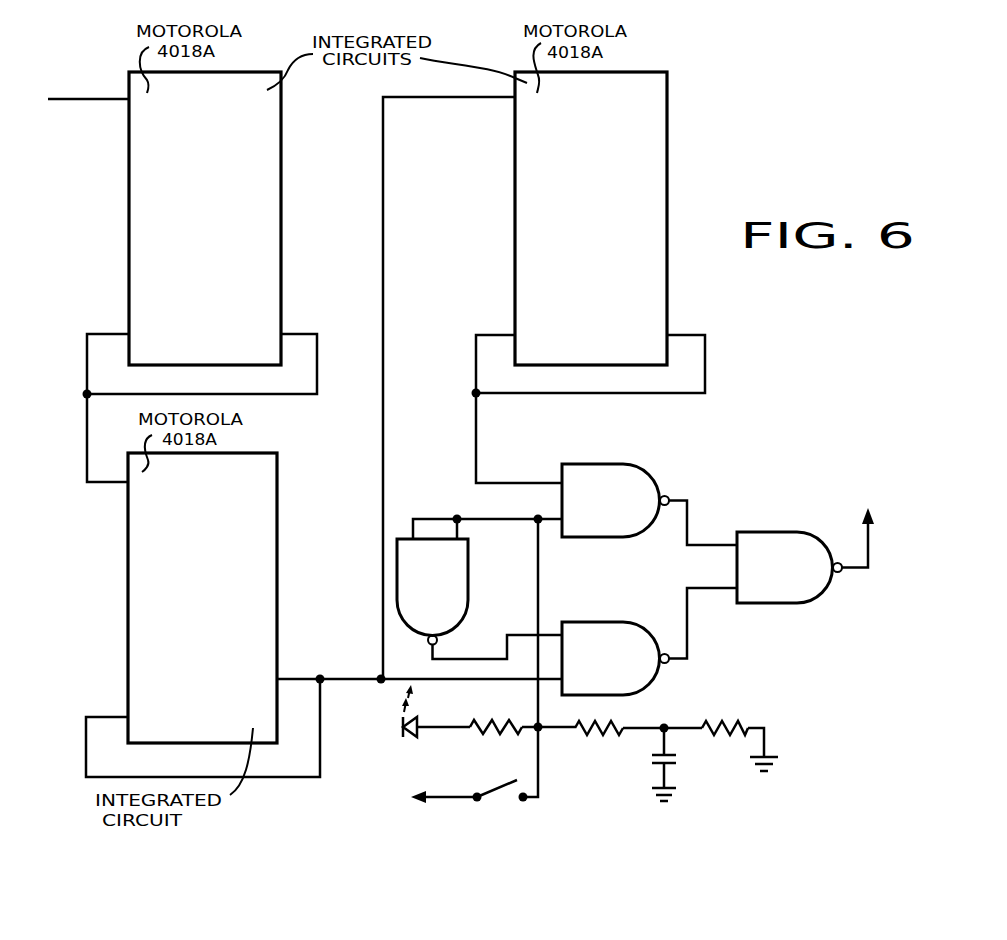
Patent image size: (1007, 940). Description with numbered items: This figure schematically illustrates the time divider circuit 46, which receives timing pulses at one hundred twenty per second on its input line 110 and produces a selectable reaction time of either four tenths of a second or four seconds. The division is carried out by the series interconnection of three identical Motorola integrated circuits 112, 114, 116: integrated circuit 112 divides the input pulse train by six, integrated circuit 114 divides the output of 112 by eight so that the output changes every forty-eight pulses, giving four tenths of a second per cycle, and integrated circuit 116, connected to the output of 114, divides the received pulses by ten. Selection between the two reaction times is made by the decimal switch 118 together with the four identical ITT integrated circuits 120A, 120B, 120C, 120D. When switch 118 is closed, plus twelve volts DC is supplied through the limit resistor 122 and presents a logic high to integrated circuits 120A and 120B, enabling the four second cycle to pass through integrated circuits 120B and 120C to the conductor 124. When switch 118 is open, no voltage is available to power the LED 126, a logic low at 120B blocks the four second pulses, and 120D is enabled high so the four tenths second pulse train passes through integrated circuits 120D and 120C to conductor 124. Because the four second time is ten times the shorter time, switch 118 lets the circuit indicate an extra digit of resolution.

The logic circuit 46 is at (722, 350).
The input line 110 is at (103, 100).
The integrated circuit 112 is at (215, 220).
The integrated circuit 114 is at (217, 565).
The integrated circuit 116 is at (610, 220).
The decimal switch 118 is at (500, 793).
The integrated circuit 120A is at (460, 581).
The integrated circuit 120B is at (628, 511).
The integrated circuit 120C is at (805, 579).
The integrated circuit 120D is at (628, 669).
The limit resistor 122 is at (497, 697).
The conductor 124 is at (870, 548).
The LED 126 is at (421, 738).